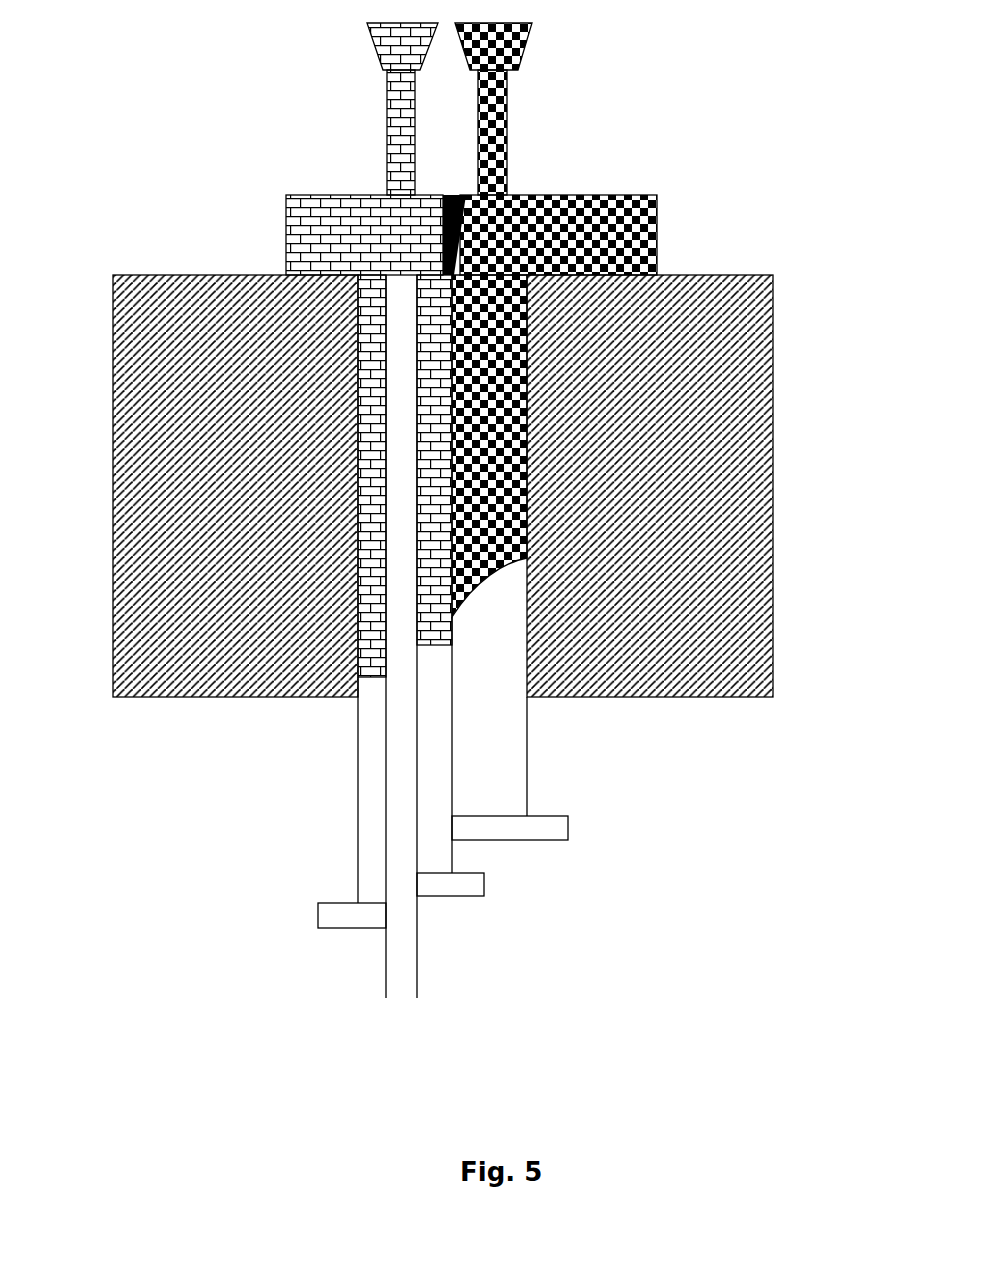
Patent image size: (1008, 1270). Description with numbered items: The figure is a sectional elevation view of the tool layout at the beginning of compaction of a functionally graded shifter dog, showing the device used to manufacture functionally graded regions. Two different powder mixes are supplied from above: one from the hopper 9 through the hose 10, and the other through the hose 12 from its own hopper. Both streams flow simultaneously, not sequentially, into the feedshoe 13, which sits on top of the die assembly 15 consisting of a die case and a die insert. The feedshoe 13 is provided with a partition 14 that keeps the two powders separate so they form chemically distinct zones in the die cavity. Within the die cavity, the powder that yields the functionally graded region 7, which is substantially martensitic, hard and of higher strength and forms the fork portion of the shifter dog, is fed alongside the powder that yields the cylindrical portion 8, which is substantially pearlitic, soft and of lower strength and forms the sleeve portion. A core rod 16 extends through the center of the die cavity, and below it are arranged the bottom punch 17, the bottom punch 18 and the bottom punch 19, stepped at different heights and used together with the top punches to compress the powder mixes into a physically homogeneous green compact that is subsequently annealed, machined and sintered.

The functionally graded region 7 is at (492, 427).
The cylindrical portion of the shifter dog 8 is at (503, 60).
The hopper 9 is at (392, 49).
The hose 10 is at (402, 149).
The hose 12 is at (487, 148).
The feedshoe 13 is at (618, 218).
The partition 14 is at (480, 213).
The die assembly 15 is at (750, 428).
The core rod 16 is at (402, 518).
The bottom punch 1 17 is at (518, 790).
The bottom punch 2 18 is at (435, 847).
The bottom punch 3 19 is at (370, 865).